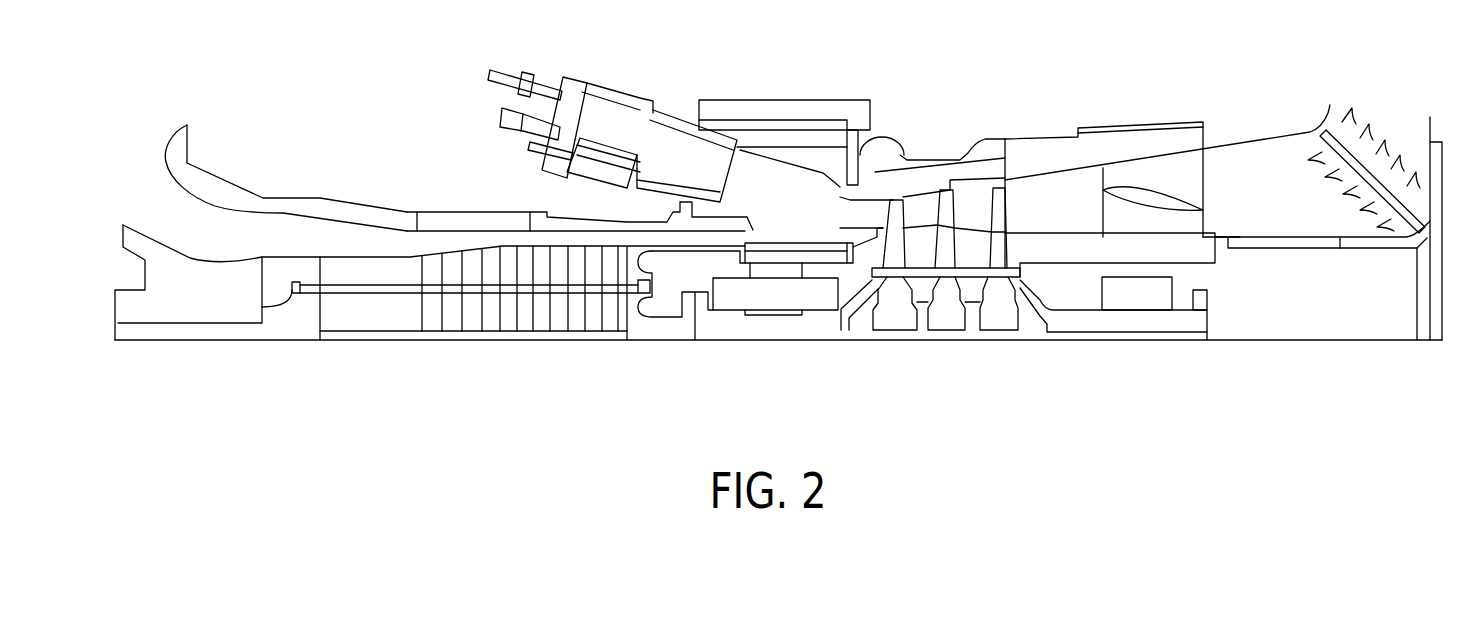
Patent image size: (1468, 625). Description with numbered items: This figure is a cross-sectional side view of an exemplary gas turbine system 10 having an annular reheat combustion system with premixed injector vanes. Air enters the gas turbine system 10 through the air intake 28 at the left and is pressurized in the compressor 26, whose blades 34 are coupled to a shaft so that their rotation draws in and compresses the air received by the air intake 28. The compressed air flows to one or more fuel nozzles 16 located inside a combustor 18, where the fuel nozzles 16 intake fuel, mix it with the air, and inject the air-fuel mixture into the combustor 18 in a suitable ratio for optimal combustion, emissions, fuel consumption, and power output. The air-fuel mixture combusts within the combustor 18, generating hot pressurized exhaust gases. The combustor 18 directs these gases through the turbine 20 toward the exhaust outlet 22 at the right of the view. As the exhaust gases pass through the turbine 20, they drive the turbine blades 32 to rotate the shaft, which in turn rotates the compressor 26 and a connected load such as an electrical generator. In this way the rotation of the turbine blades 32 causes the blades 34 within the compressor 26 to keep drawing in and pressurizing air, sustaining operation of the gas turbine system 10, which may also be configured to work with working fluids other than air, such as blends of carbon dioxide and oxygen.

The gas turbine system 10 is at (683, 368).
The fuel nozzles 16 is at (607, 135).
The combustor 18 is at (580, 73).
The turbine 20 is at (1132, 186).
The exhaust outlet 22 is at (1350, 132).
The compressor 26 is at (582, 203).
The air intake 28 is at (182, 233).
The turbine blades 32 is at (965, 219).
The compressor blades 34 is at (332, 258).